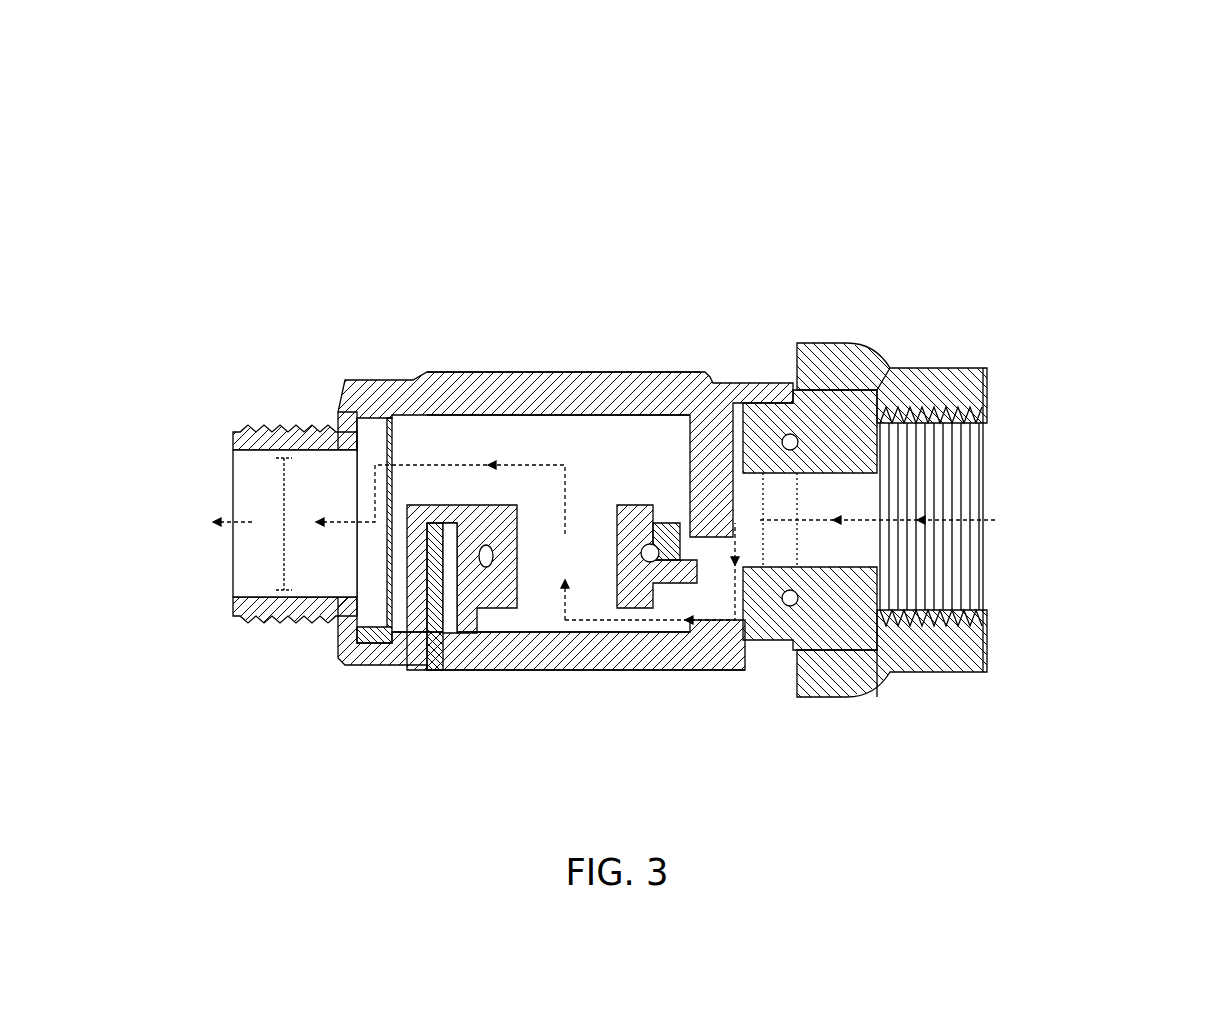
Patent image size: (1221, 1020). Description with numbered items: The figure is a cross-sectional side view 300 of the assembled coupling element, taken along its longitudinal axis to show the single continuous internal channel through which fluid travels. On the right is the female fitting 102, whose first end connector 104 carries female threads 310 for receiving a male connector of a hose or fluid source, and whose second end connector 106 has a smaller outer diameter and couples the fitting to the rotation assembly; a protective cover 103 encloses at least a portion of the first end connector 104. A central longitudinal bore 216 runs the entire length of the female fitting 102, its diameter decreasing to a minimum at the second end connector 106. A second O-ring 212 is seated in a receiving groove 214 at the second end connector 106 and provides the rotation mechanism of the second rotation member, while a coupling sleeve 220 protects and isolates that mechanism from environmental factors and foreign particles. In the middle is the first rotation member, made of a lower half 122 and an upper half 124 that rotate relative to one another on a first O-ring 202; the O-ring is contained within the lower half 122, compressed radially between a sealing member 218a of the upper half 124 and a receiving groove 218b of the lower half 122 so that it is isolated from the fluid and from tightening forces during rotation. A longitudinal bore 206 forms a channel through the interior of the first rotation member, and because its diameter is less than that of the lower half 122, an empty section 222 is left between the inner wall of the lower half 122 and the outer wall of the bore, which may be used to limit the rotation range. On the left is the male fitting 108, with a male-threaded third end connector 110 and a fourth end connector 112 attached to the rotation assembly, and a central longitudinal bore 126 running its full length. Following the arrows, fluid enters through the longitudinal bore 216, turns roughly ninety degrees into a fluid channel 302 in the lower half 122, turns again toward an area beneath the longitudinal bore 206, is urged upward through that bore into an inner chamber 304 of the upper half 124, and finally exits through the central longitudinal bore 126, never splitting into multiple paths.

The cross-sectional side view 300 is at (1165, 115).
The female fitting 102 is at (961, 500).
The protective cover 103 is at (895, 365).
The first end connector 104 is at (965, 460).
The second end connector 106 is at (858, 612).
The male fitting 108 is at (233, 583).
The third end connector 110 is at (267, 423).
The fourth end connector 112 is at (338, 412).
The lower half 122 is at (440, 662).
The upper half 124 is at (508, 372).
The central longitudinal bore 126 is at (389, 524).
The first O-ring 202 is at (482, 510).
The longitudinal bore 206 is at (518, 557).
The second O-ring 212 is at (789, 436).
The receiving groove 214 is at (762, 603).
The central longitudinal bore 216 is at (878, 520).
The sealing member 218a is at (650, 658).
The receiving groove 218b is at (670, 583).
The coupling sleeve 220 is at (807, 638).
The empty section 222 is at (455, 625).
The fluid channel 302 is at (528, 612).
The inner chamber 304 is at (604, 447).
The female threads 310 is at (945, 587).